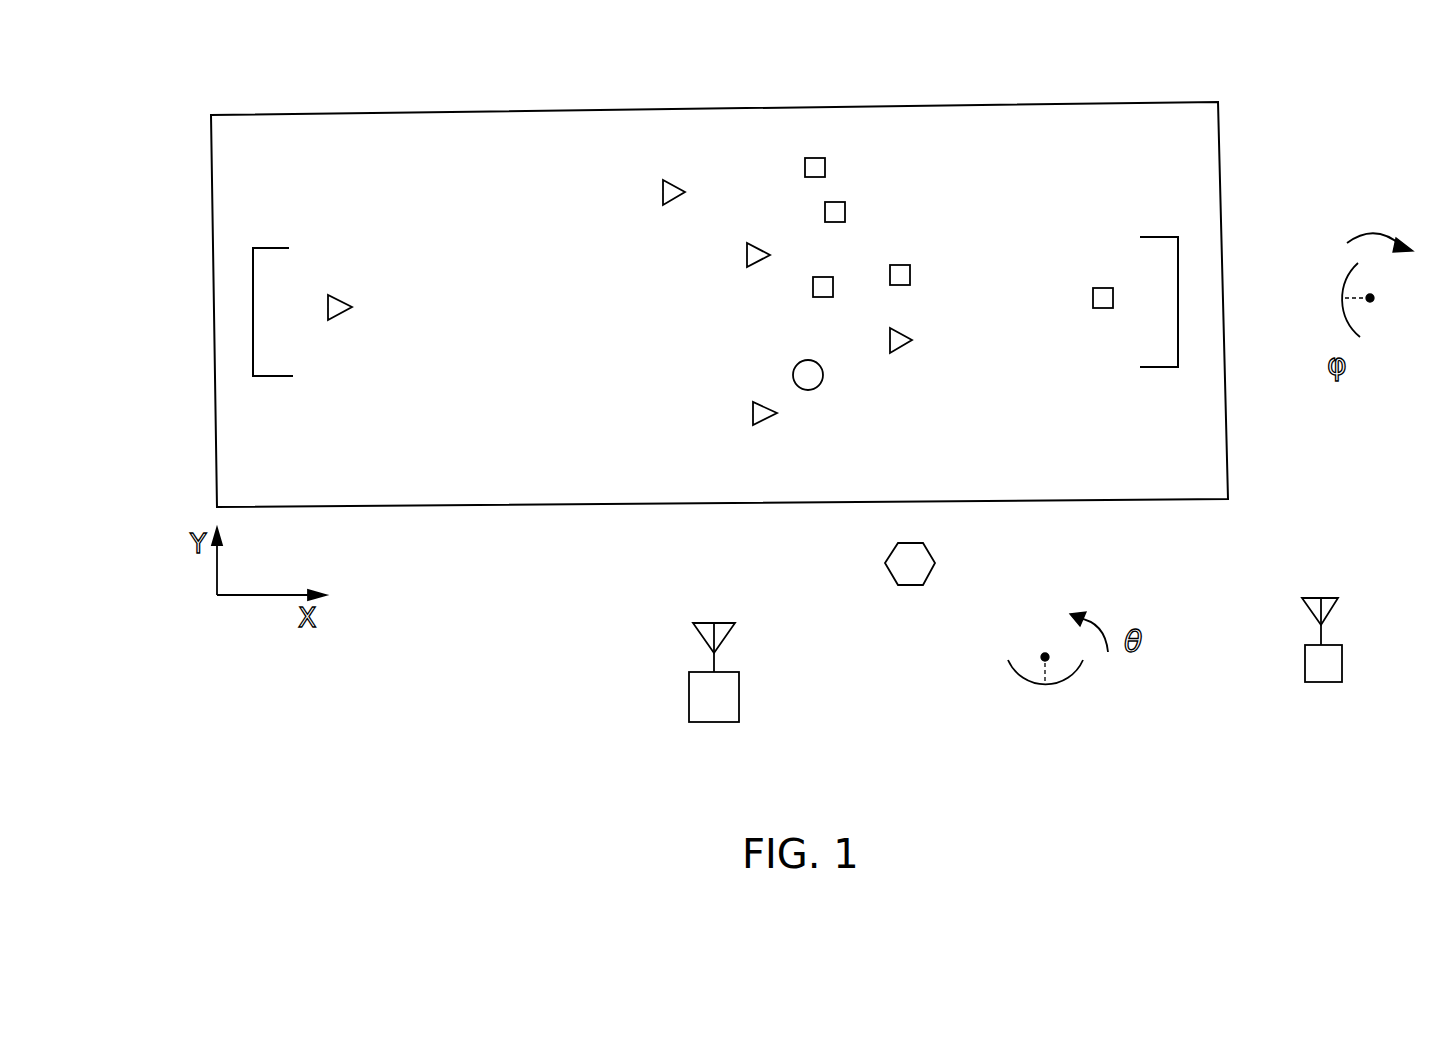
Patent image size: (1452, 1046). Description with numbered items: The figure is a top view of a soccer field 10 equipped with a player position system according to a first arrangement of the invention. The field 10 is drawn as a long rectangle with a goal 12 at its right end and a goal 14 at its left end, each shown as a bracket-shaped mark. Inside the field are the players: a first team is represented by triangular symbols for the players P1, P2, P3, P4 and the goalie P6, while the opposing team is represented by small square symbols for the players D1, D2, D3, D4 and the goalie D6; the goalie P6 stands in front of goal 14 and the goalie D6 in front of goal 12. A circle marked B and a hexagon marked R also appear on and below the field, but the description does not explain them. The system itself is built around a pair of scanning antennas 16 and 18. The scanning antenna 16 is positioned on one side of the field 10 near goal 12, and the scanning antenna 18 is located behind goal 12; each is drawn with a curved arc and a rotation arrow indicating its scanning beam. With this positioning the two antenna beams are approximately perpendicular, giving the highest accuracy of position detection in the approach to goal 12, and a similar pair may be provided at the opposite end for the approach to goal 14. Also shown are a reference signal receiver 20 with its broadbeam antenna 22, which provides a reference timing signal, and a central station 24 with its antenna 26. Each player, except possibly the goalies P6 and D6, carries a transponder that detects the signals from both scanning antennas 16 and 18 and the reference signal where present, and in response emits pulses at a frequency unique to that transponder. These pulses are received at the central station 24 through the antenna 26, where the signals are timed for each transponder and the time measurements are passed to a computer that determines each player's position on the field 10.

The soccer field 10 is at (730, 109).
The goal 12 is at (1178, 268).
The goal 14 is at (253, 316).
The scanning antenna 16 is at (1062, 683).
The scanning antenna 18 is at (1357, 317).
The reference signal receiver 20 is at (1342, 663).
The broadbeam antenna 22 is at (1333, 608).
The central station 24 is at (689, 697).
The antenna 26 is at (705, 640).
The player P1 is at (907, 345).
The player P2 is at (752, 412).
The player P3 is at (745, 256).
The player P4 is at (661, 193).
The goalie P6 is at (345, 312).
The player D1 is at (910, 272).
The player D2 is at (812, 285).
The player D3 is at (848, 210).
The player D4 is at (805, 165).
The goalie D6 is at (1101, 309).
The ball B is at (793, 370).
The referee R is at (935, 566).